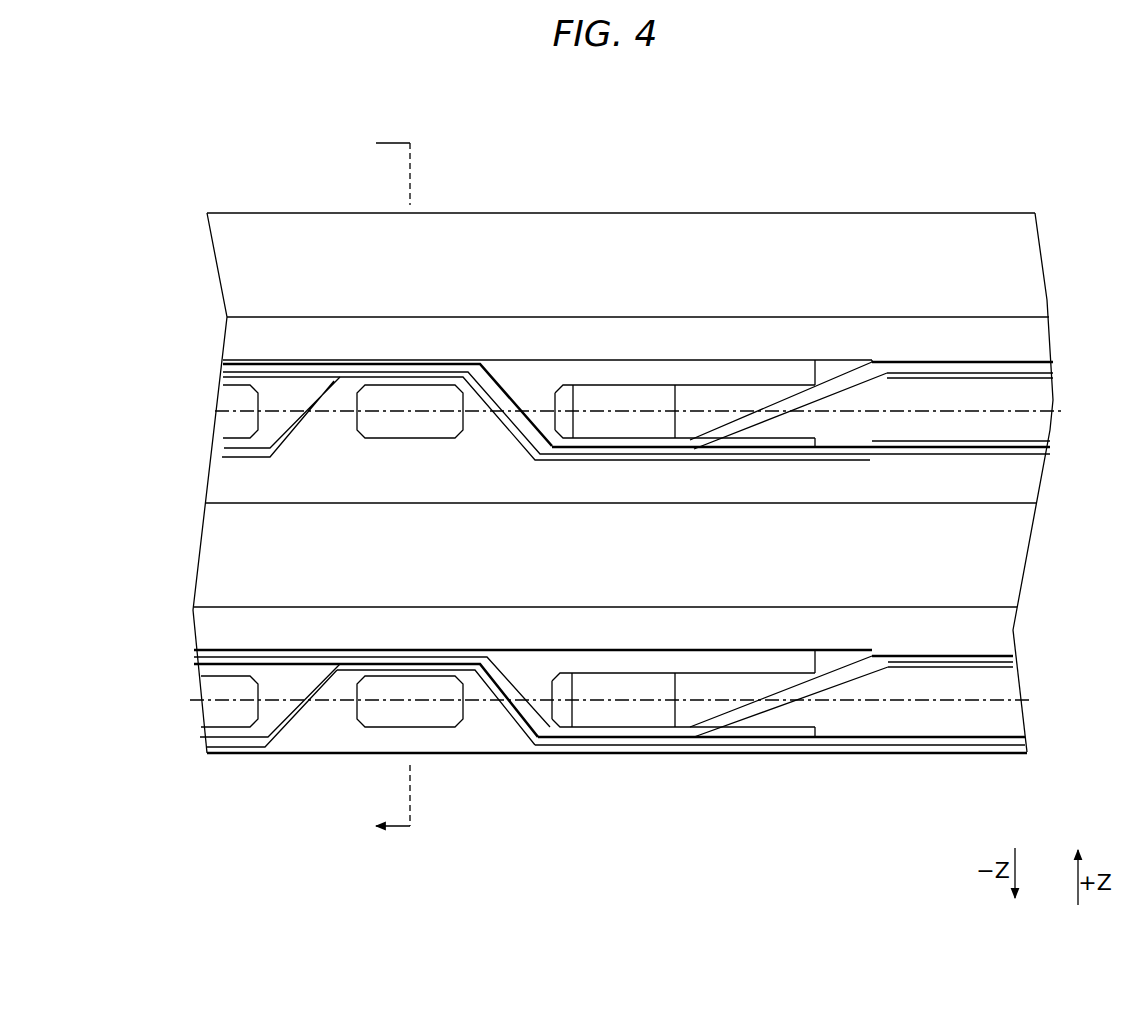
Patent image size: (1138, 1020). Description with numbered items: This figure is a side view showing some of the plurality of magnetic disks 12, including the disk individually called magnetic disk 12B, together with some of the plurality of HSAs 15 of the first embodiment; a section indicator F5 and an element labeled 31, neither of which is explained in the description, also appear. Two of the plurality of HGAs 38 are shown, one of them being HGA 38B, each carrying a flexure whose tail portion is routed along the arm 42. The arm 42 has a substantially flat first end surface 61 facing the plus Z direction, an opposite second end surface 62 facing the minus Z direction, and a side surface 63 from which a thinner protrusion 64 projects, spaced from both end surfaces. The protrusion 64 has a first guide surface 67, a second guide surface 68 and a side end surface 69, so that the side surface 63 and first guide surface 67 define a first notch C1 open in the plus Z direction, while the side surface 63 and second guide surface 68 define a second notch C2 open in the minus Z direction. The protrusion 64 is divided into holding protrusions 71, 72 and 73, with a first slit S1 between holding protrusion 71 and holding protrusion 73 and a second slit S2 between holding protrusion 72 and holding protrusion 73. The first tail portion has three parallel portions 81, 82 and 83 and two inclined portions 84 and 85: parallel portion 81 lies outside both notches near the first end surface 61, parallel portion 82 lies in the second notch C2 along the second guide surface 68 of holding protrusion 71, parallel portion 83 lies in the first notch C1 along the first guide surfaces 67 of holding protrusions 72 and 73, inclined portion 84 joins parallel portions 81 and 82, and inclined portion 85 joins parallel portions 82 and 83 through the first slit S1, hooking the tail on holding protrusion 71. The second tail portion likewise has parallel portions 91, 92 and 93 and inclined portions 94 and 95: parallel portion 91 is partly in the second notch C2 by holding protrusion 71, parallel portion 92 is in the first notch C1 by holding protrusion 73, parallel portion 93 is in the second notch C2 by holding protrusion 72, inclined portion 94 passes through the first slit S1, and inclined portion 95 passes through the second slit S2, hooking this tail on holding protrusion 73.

The magnetic disk 12 is at (782, 255).
The magnetic disk 12B is at (212, 560).
The base portion 31 is at (1000, 213).
The HSA 15 is at (590, 354).
The arm 42 is at (565, 759).
The parallel portion 81 is at (1033, 363).
The parallel portion 91 is at (1024, 456).
The HGA 38 is at (967, 644).
The HGA 38B is at (931, 464).
The inclined portion 84 is at (757, 423).
The first end surface 61 is at (666, 358).
The holding protrusion 71 is at (633, 402).
The first notch C1 is at (733, 364).
The first slit S1 is at (541, 388).
The inclined portion 85 is at (508, 383).
The side surface 63 is at (530, 383).
The parallel portion 83 is at (266, 372).
The inclined portion 95 is at (306, 430).
The first guide surface 67 is at (320, 398).
The parallel portion 92 is at (402, 368).
The side end surface 69 is at (437, 397).
The holding protrusion 73 is at (432, 720).
The protrusion 64 is at (225, 397).
The holding protrusion 72 is at (238, 428).
The parallel portion 93 is at (232, 460).
The second slit S2 is at (261, 380).
The second end surface 62 is at (490, 462).
The inclined portion 94 is at (517, 456).
The parallel portion 82 is at (608, 443).
The second guide surface 68 is at (392, 437).
The second notch C2 is at (422, 462).
The section line F5 is at (393, 488).